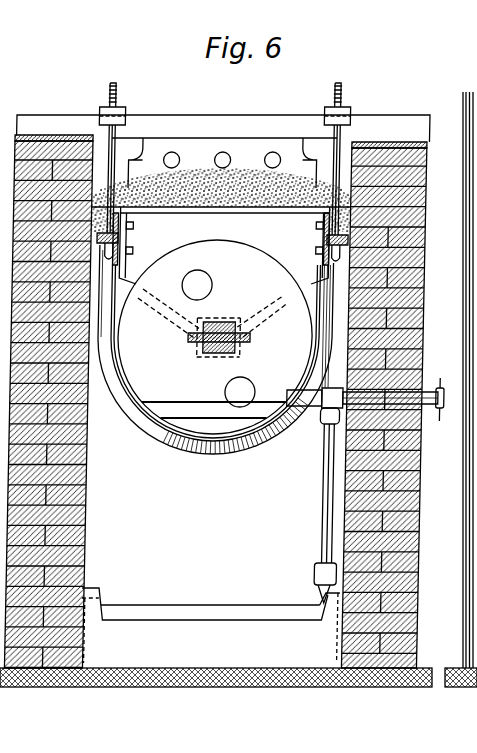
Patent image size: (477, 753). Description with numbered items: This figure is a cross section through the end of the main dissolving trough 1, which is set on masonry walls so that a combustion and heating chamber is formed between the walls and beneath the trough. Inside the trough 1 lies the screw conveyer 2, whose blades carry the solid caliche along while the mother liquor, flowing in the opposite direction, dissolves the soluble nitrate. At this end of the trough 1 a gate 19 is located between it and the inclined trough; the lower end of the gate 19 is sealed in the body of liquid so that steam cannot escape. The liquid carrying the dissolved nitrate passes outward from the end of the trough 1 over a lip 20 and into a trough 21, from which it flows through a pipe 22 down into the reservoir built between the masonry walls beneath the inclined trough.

The trough 1 is at (170, 428).
The screw conveyer 2 is at (148, 380).
The gate 19 is at (255, 150).
The lip 20 is at (172, 612).
The trough 21 is at (232, 410).
The pipe 22 is at (297, 393).